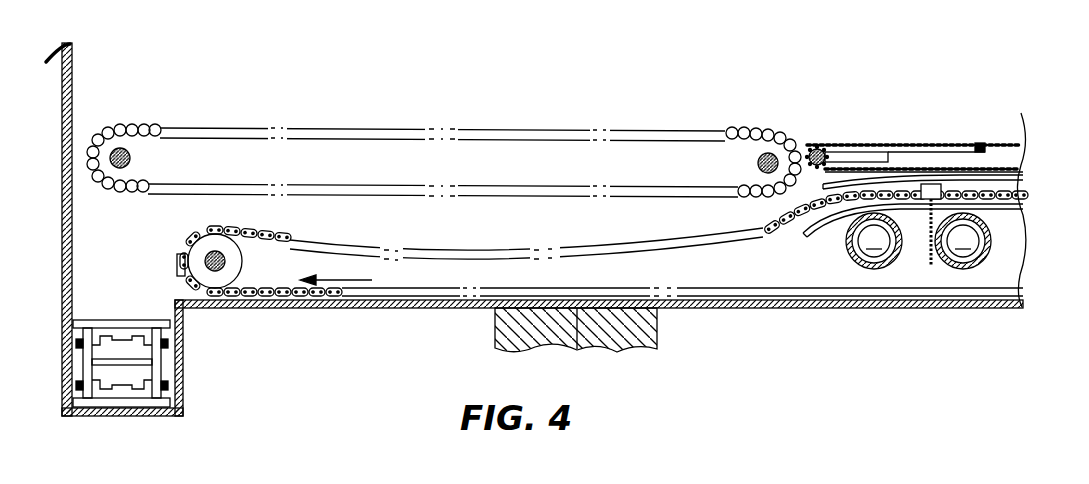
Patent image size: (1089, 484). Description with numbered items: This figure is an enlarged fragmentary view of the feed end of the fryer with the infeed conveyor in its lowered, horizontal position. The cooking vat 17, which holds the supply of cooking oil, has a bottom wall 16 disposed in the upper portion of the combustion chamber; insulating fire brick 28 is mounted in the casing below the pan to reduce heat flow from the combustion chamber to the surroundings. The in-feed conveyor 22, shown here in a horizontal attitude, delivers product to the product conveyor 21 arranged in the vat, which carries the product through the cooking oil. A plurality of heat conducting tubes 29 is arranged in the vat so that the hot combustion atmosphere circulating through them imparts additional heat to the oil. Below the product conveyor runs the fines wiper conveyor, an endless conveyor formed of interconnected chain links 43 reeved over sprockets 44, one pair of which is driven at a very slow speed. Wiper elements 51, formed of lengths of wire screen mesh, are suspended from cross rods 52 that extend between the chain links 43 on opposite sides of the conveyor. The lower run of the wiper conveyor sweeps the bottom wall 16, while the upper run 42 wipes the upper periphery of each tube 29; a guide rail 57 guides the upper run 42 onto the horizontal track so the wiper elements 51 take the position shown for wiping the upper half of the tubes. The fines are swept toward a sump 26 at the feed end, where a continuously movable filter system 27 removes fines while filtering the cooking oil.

The bottom wall 16 is at (796, 310).
The cooking vat 17 is at (588, 283).
The product conveyor 21 is at (851, 142).
The in-feed conveyor 22 is at (729, 133).
The sump 26 is at (183, 373).
The filter system 27 is at (120, 360).
The insulating fire brick 28 is at (495, 335).
The heat conducting tubes 29 is at (918, 241).
The upper run 42 is at (585, 250).
The chain links 43 is at (976, 194).
The sprockets 44 is at (248, 264).
The wiper elements 51 is at (185, 285).
The cross rods 52 is at (931, 184).
The guide rail 57 is at (826, 228).